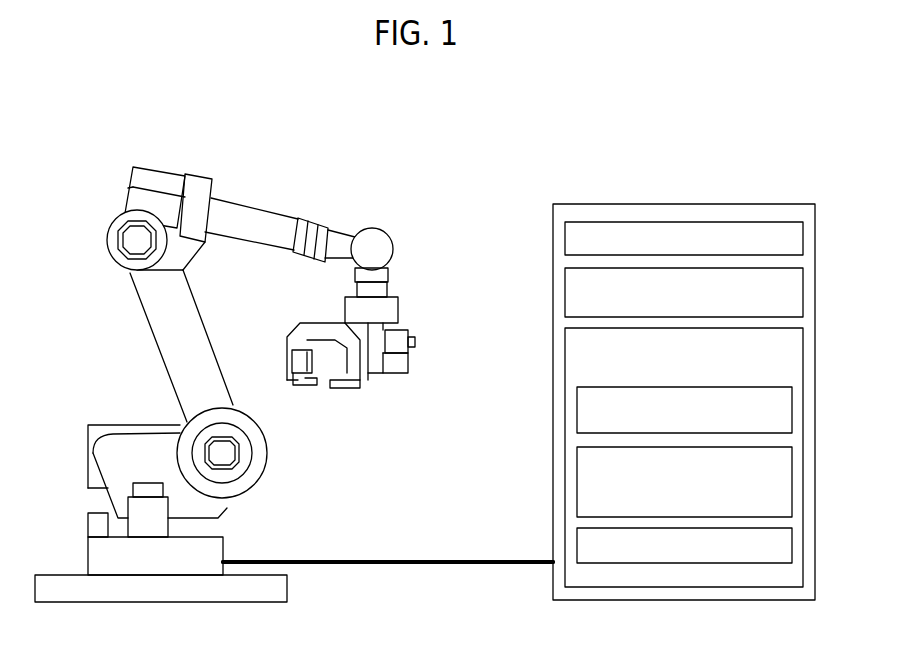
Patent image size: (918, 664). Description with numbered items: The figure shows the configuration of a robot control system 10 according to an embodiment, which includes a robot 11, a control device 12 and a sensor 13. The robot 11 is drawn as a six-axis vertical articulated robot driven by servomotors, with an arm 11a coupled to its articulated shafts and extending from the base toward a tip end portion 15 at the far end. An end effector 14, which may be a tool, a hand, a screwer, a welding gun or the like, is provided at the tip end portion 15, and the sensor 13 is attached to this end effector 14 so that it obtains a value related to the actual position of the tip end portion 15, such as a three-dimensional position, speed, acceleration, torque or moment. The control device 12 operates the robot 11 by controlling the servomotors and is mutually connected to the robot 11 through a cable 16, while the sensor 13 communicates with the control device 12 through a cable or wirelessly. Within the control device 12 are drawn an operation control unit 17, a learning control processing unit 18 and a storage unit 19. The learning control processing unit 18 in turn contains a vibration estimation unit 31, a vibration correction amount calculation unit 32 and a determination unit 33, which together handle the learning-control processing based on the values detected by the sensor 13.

The robot control system 10 is at (457, 158).
The robot 11 is at (140, 333).
The arm 11a is at (263, 217).
The control device 12 is at (688, 203).
The sensor 13 is at (297, 362).
The end effector 14 is at (303, 333).
The tip end portion 15 is at (390, 312).
The cable 16 is at (387, 558).
The operation control unit 17 is at (565, 292).
The learning control processing unit 18 is at (565, 356).
The storage unit 19 is at (565, 240).
The vibration estimation unit 31 is at (577, 413).
The vibration correction amount calculation unit 32 is at (577, 470).
The determination unit 33 is at (577, 548).